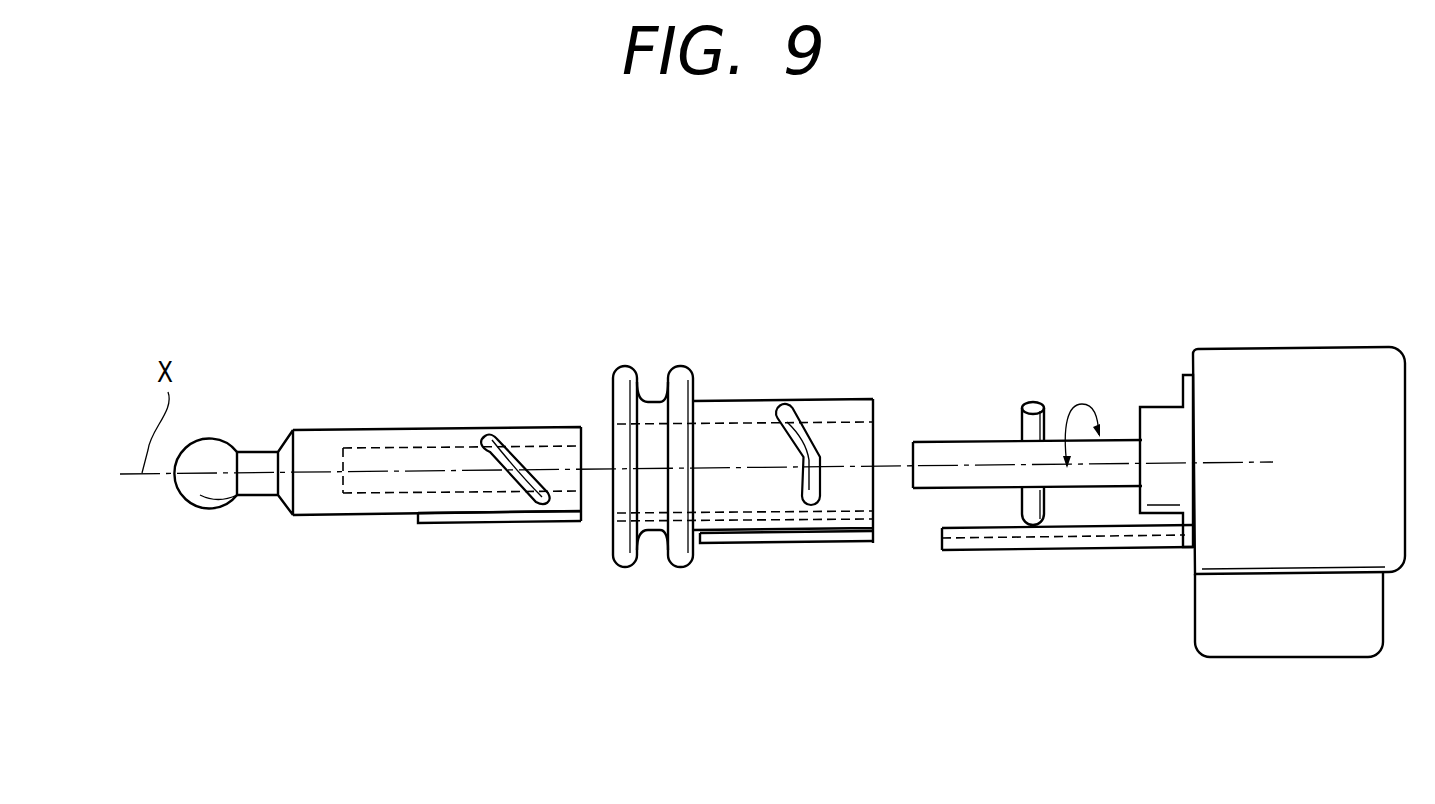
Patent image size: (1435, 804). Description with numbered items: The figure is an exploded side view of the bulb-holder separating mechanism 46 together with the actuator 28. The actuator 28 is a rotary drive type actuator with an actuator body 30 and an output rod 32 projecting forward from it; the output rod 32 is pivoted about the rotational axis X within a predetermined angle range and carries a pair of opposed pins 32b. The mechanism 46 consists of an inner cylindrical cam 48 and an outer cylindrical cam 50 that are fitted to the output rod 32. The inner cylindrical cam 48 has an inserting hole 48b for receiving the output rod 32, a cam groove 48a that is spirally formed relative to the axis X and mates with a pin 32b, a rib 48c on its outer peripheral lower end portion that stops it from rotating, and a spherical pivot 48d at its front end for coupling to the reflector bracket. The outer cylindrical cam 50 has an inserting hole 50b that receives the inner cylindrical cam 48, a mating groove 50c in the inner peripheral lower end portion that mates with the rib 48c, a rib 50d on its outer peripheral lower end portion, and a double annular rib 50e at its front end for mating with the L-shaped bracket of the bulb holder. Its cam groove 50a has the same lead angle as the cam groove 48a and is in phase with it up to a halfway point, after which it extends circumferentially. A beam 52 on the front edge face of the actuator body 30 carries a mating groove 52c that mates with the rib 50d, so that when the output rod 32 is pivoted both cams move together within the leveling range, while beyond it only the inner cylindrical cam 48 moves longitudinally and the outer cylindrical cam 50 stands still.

The actuator 28 is at (1268, 348).
The actuator body 30 is at (1368, 350).
The output rod 32 is at (964, 440).
The pins 32b is at (1040, 406).
The bulb-holder separating mechanism 46 is at (953, 268).
The inner cylindrical cam 48 is at (388, 430).
The cam groove 48a is at (503, 437).
The inserting hole 48b is at (363, 490).
The rib 48c is at (485, 525).
The spherical pivot 48d is at (199, 496).
The outer cylindrical cam 50 is at (742, 397).
The cam groove 50a is at (808, 404).
The inserting hole 50b is at (728, 500).
The mating groove 50c is at (611, 518).
The rib 50d is at (817, 543).
The double annular rib 50e is at (660, 400).
The beam 52 is at (1008, 550).
The mating groove 52c is at (933, 538).